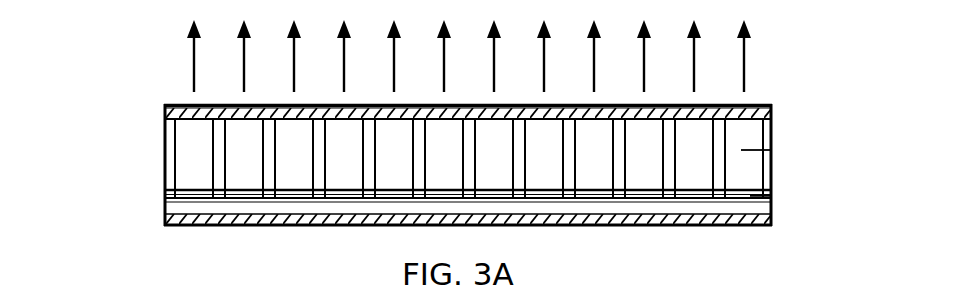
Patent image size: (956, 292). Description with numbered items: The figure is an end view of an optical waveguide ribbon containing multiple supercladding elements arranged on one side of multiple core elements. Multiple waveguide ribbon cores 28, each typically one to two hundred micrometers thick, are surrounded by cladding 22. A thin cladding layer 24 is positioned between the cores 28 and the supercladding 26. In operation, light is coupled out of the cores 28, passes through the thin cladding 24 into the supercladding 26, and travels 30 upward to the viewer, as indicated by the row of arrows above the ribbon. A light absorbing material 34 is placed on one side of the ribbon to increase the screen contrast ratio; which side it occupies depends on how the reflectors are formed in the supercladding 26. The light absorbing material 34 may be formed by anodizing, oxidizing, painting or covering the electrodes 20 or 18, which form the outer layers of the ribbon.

The electrode 18 is at (777, 220).
The electrode 20 is at (777, 110).
The cladding 22 is at (172, 145).
The thin cladding layer 24 is at (160, 191).
The supercladding 26 is at (771, 150).
The waveguide ribbon core 28 is at (771, 193).
The light travel to the viewer 30 is at (182, 58).
The light absorbing material 34 is at (160, 108).